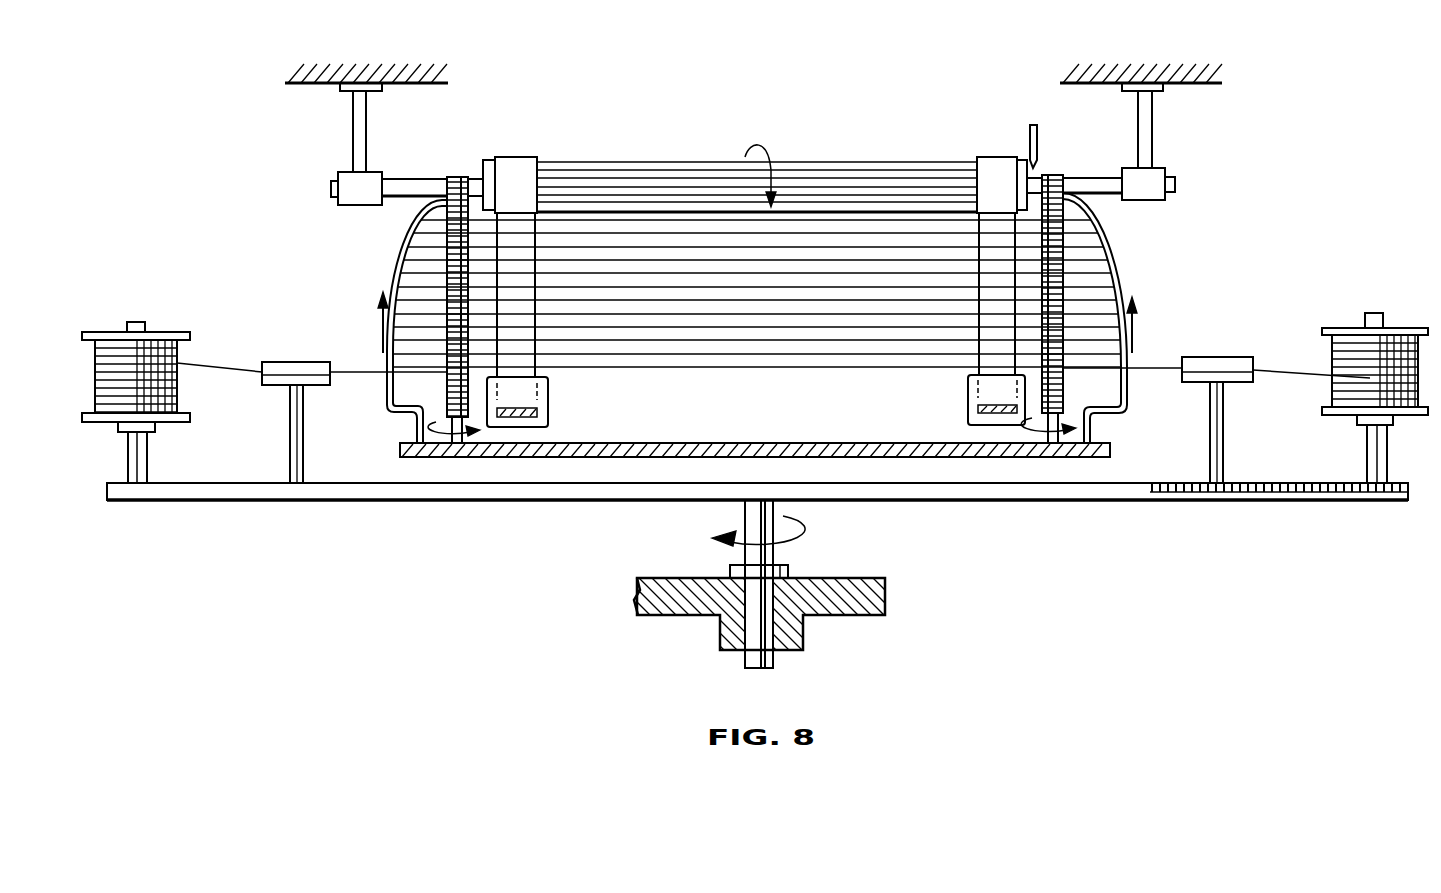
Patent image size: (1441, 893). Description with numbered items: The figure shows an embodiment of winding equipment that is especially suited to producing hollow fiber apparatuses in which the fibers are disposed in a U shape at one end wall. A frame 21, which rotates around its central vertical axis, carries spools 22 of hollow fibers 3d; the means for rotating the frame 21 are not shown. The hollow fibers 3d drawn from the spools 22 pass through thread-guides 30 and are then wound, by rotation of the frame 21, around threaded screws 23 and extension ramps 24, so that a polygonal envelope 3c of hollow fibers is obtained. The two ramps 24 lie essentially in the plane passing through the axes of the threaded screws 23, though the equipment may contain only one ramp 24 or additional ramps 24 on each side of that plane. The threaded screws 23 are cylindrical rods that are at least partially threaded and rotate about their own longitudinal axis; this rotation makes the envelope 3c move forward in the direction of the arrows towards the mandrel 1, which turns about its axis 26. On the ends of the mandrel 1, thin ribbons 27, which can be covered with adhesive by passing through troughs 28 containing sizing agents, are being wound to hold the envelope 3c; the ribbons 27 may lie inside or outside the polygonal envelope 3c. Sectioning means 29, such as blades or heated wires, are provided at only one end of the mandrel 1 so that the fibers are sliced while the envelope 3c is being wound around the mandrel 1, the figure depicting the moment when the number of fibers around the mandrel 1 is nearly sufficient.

The mandrel 1 is at (838, 170).
The frame 21 is at (493, 492).
The spools 22 is at (160, 335).
The threaded screws 23 is at (457, 177).
The extension ramps 24 is at (395, 266).
The axis of the mandrel 26 is at (1090, 178).
The ribbons 27 is at (513, 165).
The troughs 28 is at (548, 398).
The sectioning means 29 is at (1030, 125).
The thread-guides 30 is at (308, 362).
The envelope of hollow fibers 3c is at (738, 328).
The hollow fiber 3d is at (233, 372).